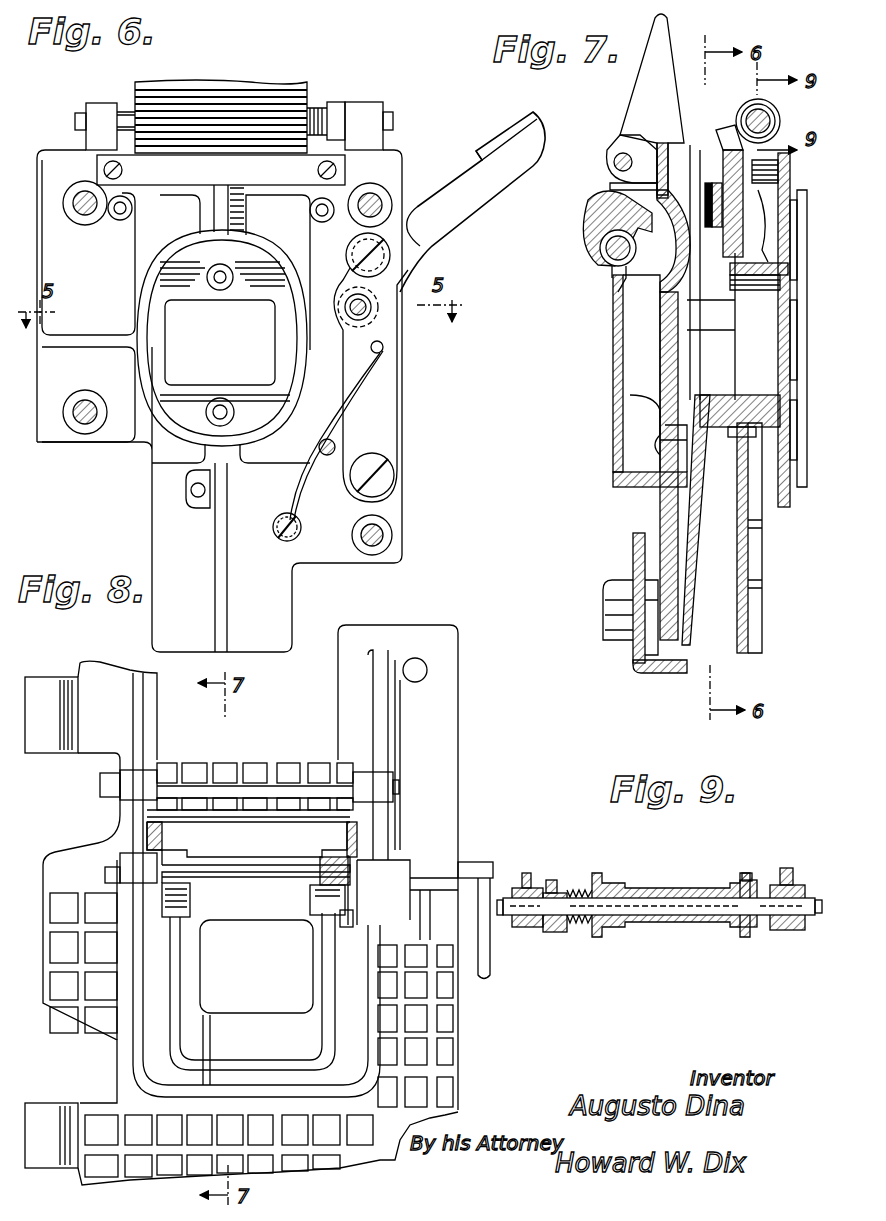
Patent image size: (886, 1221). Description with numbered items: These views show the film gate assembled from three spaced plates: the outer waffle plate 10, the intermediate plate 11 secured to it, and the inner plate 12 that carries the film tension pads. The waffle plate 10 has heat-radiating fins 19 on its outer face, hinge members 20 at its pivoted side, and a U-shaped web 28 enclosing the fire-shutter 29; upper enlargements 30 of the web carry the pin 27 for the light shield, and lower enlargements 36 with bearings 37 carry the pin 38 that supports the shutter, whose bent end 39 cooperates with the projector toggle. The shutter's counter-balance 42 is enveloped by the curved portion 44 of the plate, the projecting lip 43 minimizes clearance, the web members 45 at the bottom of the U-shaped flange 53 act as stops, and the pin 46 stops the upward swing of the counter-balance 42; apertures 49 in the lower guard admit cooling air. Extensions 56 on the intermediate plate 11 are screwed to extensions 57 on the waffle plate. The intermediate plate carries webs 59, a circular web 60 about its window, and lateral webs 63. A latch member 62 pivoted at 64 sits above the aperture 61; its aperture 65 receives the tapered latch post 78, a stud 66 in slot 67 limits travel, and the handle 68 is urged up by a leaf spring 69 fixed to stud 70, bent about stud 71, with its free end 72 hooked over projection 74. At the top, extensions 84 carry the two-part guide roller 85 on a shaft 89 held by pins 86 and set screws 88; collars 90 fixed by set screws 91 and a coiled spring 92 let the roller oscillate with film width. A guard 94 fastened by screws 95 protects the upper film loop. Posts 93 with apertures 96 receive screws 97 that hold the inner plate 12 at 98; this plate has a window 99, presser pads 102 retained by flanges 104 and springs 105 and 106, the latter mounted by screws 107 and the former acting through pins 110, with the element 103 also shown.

In FIG. 7, the waffle plate 10 is at (630, 500).
In FIG. 8, the waffle plate 10 is at (455, 1078).
In FIG. 6, the intermediate plate 11 is at (150, 505).
In FIG. 7, the intermediate plate 11 is at (763, 578).
In FIG. 7, the inner plate 12 is at (763, 505).
In FIG. 8, the fins or webs 19 is at (450, 1052).
In FIG. 8, the hinge members 20 is at (66, 672).
In FIG. 7, the pin 27 is at (620, 145).
In FIG. 8, the pin 27 is at (190, 775).
In FIG. 7, the U-shaped web 28 is at (618, 488).
In FIG. 8, the U-shaped web 28 is at (135, 710).
In FIG. 7, the fire-shutter 29 is at (612, 375).
In FIG. 8, the fire-shutter 29 is at (280, 880).
In FIG. 8, the upper enlargements 30 is at (398, 770).
In FIG. 8, the enlargements 36 is at (180, 858).
In FIG. 8, the bearings 37 is at (100, 830).
In FIG. 7, the pin 38 is at (603, 252).
In FIG. 8, the pin 38 is at (462, 862).
In FIG. 8, the curved end portion 39 is at (484, 978).
In FIG. 7, the counter-balance 42 is at (592, 210).
In FIG. 7, the projecting lip 43 is at (633, 277).
In FIG. 7, the curved portion 44 is at (690, 295).
In FIG. 7, the web members 45 is at (640, 435).
In FIG. 8, the web members 45 is at (300, 1075).
In FIG. 8, the pin 46 is at (340, 920).
In FIG. 7, the apertures 49 is at (648, 675).
In FIG. 8, the U-shaped flange 53 is at (312, 998).
In FIG. 7, the extensions 56 is at (612, 178).
In FIG. 7, the extensions 57 is at (678, 185).
In FIG. 7, the web members 59 is at (760, 530).
In FIG. 6, the circular web 60 is at (160, 278).
In FIG. 7, the circular web 60 is at (678, 520).
In FIG. 6, the aperture 61 is at (372, 298).
In FIG. 6, the latch member 62 is at (398, 412).
In FIG. 6, the webs 63 is at (228, 605).
In FIG. 7, the webs 63 is at (733, 535).
In FIG. 6, the pivot 64 is at (390, 470).
In FIG. 6, the aperture 65 is at (345, 308).
In FIG. 6, the stud 66 is at (380, 262).
In FIG. 6, the slot 67 is at (352, 262).
In FIG. 6, the handle 68 is at (468, 205).
In FIG. 6, the leaf spring 69 is at (351, 532).
In FIG. 6, the stud 70 is at (293, 540).
In FIG. 6, the stud 71 is at (312, 458).
In FIG. 6, the free end 72 is at (444, 386).
In FIG. 6, the projection 74 is at (397, 362).
In FIG. 6, the latch post 78 is at (384, 348).
In FIG. 6, the extensions 84 is at (100, 105).
In FIG. 9, the extensions 84 is at (535, 885).
In FIG. 9, the film guide rollers 85 is at (700, 868).
In FIG. 9, the pins 86 is at (545, 930).
In FIG. 9, the set screws 88 is at (517, 872).
In FIG. 9, the shaft 89 is at (600, 932).
In FIG. 9, the collars 90 is at (560, 932).
In FIG. 9, the set screws 91 is at (747, 872).
In FIG. 9, the coiled spring 92 is at (578, 888).
In FIG. 7, the posts 93 is at (770, 410).
In FIG. 6, the guard or shield 94 is at (245, 90).
In FIG. 6, the screws 95 is at (125, 170).
In FIG. 7, the screws 95 is at (712, 140).
In FIG. 6, the apertures 96 is at (195, 510).
In FIG. 7, the apertures 96 is at (645, 425).
In FIG. 7, the screws 97 is at (658, 448).
In FIG. 7, the inner plate attachment 98 is at (740, 435).
In FIG. 7, the window 99 is at (745, 290).
In FIG. 7, the presser pads or shoes 102 is at (598, 228).
In FIG. 7, the bar 103 is at (759, 304).
In FIG. 7, the flanges 104 is at (791, 330).
In FIG. 7, the springs 105 is at (650, 373).
In FIG. 7, the springs 106 is at (612, 336).
In FIG. 7, the screws 107 is at (765, 158).
In FIG. 7, the pins 110 is at (690, 330).